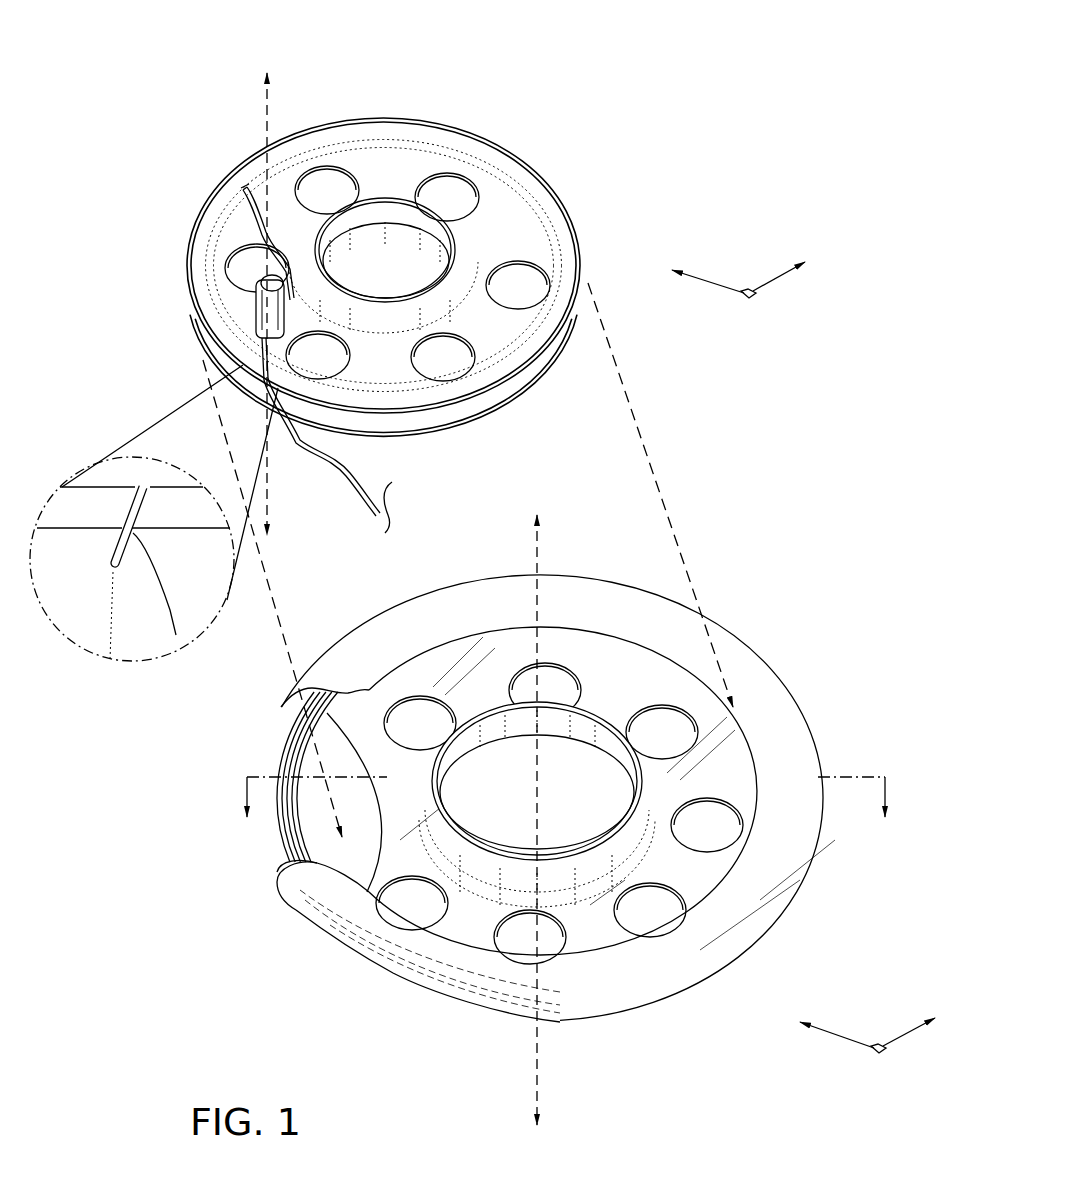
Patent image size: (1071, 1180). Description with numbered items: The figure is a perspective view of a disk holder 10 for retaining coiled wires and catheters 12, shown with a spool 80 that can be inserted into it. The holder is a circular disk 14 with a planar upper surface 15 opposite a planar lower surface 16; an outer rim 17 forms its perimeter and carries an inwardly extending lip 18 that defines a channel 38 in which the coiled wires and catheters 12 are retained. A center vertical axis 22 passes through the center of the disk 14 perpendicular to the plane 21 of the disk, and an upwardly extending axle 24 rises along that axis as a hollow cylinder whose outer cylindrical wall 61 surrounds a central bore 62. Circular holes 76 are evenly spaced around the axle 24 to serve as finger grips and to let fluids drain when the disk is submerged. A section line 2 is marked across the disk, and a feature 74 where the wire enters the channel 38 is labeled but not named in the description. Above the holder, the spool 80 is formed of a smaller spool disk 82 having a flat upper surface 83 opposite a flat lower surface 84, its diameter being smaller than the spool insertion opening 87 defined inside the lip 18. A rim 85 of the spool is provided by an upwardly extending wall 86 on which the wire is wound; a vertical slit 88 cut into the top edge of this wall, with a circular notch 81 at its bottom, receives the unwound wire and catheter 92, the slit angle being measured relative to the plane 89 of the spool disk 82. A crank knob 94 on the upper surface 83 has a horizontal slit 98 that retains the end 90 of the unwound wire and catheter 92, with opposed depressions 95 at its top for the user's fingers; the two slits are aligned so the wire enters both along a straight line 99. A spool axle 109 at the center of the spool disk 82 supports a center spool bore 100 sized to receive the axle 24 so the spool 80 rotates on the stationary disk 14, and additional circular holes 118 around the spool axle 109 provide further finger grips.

The disk holder 10 is at (860, 567).
The coiled wires and catheters 12 is at (285, 738).
The circular disk 14 is at (723, 760).
The planar upper surface 15 is at (603, 699).
The planar lower surface 16 is at (710, 1003).
The outer rim 17 is at (614, 580).
The inwardly extending lip 18 is at (797, 756).
The section line 2- 2 is at (565, 820).
The plane of the disk 21 is at (878, 1046).
The center vertical axis 22 is at (537, 1048).
The upwardly extending axle 24 is at (623, 833).
The channel 38 is at (295, 708).
The outer cylindrical wall 61 is at (463, 847).
The central bore 62 is at (515, 812).
The film tab 74 is at (303, 672).
The circular holes 76 is at (557, 683).
The spool 80 is at (147, 102).
The circular notch 81 is at (110, 660).
The spool disk 82 is at (498, 203).
The flat upper surface 83 is at (371, 189).
The flat lower surface 84 is at (466, 450).
The rim 85 is at (586, 281).
The upwardly extending wall 86 is at (553, 212).
The spool insertion opening 87 is at (735, 782).
The vertical slit 88 is at (154, 526).
The plane of the spool disk 89 is at (748, 291).
The end of the unwound wire and catheter 90 is at (244, 186).
The unwound wire and catheter 92 is at (367, 478).
The crank knob 94 is at (252, 310).
The opposed depressions 95 is at (262, 276).
The horizontal slit 98 is at (272, 335).
The straight line 99 is at (268, 98).
The center spool bore 100 is at (396, 246).
The spool axle 109 is at (427, 217).
The circular holes 118 is at (517, 287).